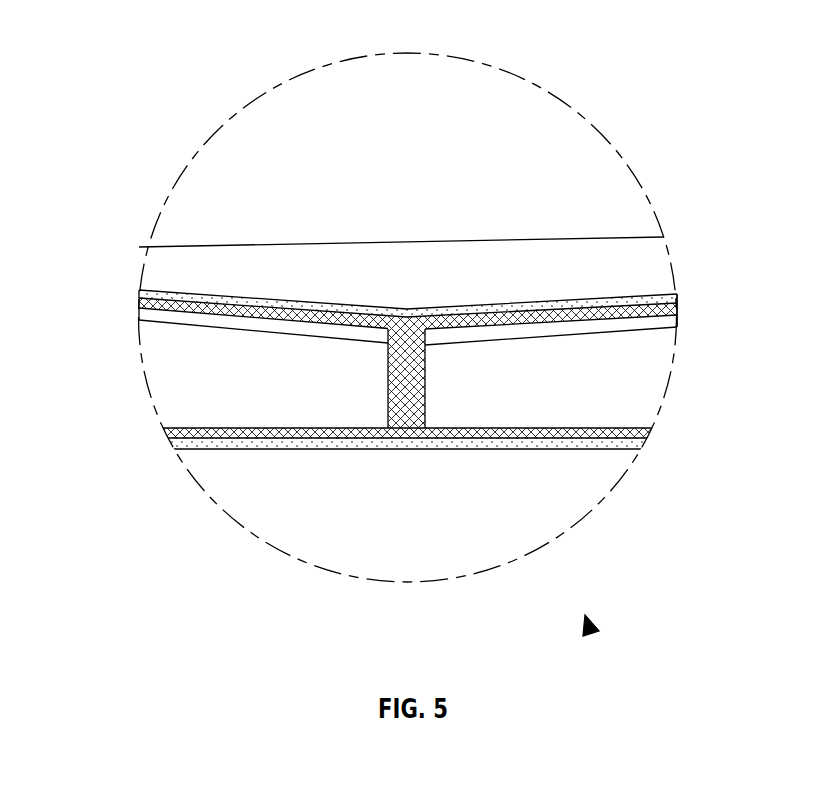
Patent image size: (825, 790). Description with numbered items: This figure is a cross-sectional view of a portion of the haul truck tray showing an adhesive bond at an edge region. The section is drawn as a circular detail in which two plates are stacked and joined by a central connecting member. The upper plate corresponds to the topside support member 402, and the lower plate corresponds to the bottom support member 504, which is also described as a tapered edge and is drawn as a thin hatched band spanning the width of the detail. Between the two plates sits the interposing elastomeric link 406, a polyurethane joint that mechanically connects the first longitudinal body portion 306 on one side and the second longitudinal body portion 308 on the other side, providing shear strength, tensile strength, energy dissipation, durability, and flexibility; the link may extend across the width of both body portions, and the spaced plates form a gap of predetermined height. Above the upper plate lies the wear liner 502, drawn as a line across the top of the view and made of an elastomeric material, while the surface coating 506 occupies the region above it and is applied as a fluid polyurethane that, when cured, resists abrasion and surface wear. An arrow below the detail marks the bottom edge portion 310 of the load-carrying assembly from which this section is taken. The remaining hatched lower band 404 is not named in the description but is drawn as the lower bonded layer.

The first longitudinal body portion 306 is at (165, 365).
The second longitudinal body portion 308 is at (570, 385).
The bottom edge portion 310 is at (592, 635).
The topside support member 402 is at (415, 308).
The second layer 404 is at (488, 440).
The interposing elastomeric link 406 is at (412, 362).
The wear liner 502 is at (166, 248).
The bottom support member 504 is at (630, 296).
The surface coating 506 is at (562, 155).